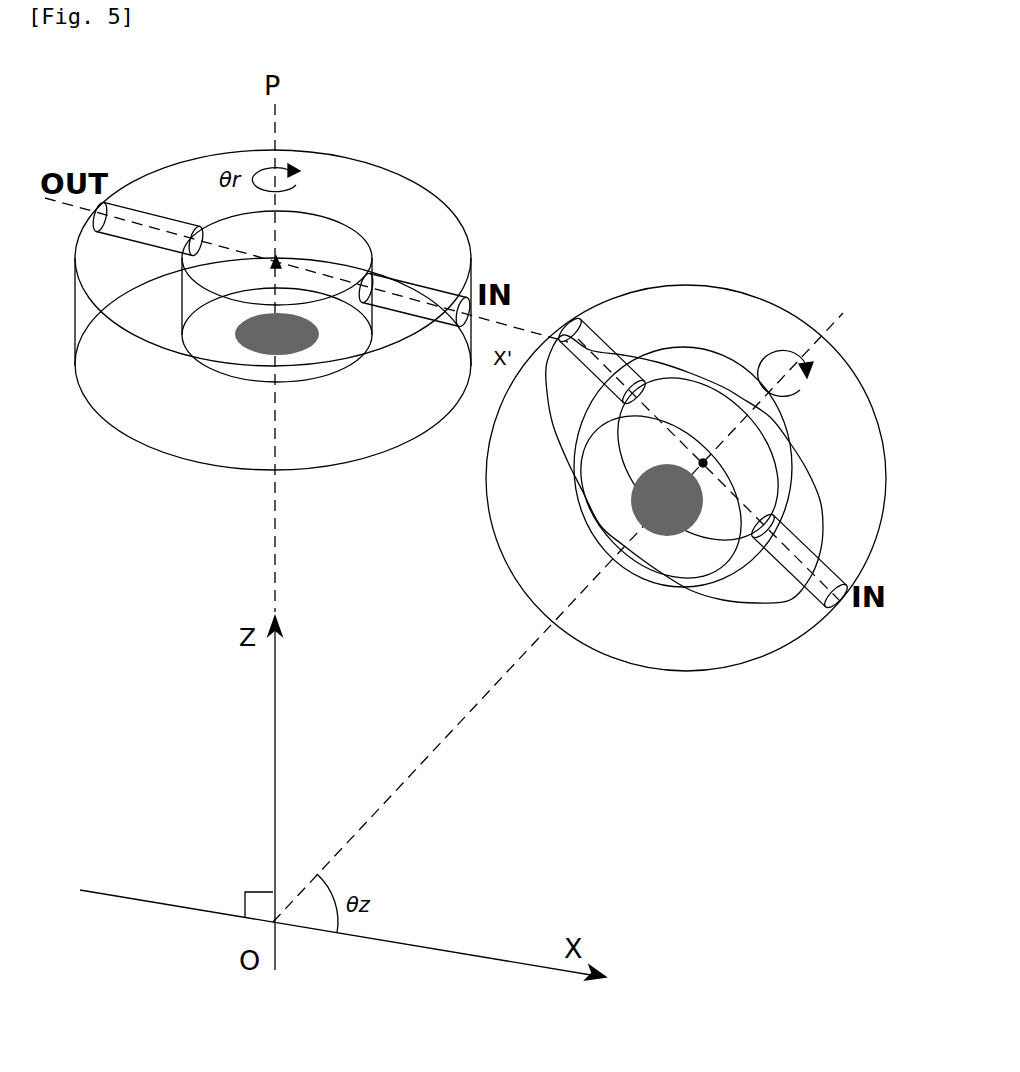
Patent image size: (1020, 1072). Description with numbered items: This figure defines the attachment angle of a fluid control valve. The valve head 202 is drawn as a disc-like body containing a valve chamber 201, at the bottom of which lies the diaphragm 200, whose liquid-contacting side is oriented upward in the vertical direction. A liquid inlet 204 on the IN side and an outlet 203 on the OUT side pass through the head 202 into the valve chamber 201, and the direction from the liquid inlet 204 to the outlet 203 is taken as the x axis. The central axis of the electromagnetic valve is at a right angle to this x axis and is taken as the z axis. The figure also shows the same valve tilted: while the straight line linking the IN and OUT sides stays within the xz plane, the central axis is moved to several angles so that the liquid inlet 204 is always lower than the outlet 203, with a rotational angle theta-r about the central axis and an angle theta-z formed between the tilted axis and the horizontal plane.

The diaphragm 200 is at (240, 343).
The valve chamber 201 is at (335, 237).
The head 202 is at (413, 238).
The outlet 203 is at (137, 217).
The liquid inlet 204 is at (427, 313).